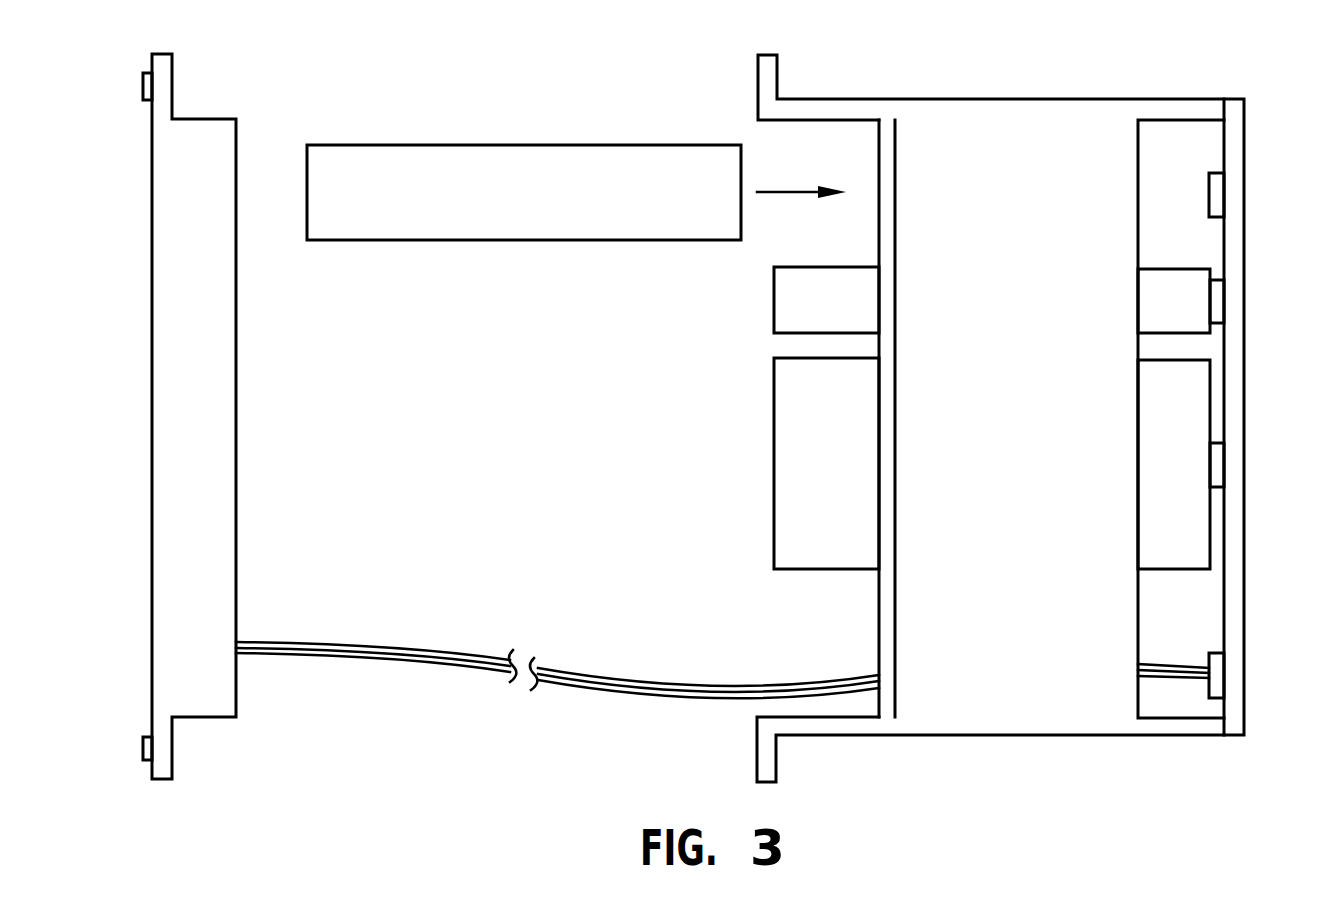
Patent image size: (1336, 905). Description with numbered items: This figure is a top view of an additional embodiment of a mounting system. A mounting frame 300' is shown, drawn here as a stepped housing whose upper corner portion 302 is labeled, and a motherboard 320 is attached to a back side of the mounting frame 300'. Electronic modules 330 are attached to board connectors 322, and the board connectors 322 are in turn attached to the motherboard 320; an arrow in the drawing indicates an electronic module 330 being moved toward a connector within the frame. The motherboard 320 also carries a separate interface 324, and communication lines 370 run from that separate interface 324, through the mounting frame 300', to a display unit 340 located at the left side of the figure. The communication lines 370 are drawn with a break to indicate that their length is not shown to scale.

The mounting frame 300' is at (1002, 414).
The housing bracket 302 is at (757, 87).
The motherboard 320 is at (1244, 393).
The board connectors 322 is at (1222, 198).
The separate interface 324 is at (1222, 678).
The electronic modules 330 is at (525, 145).
The display unit 340 is at (152, 418).
The communication lines 370 is at (742, 713).